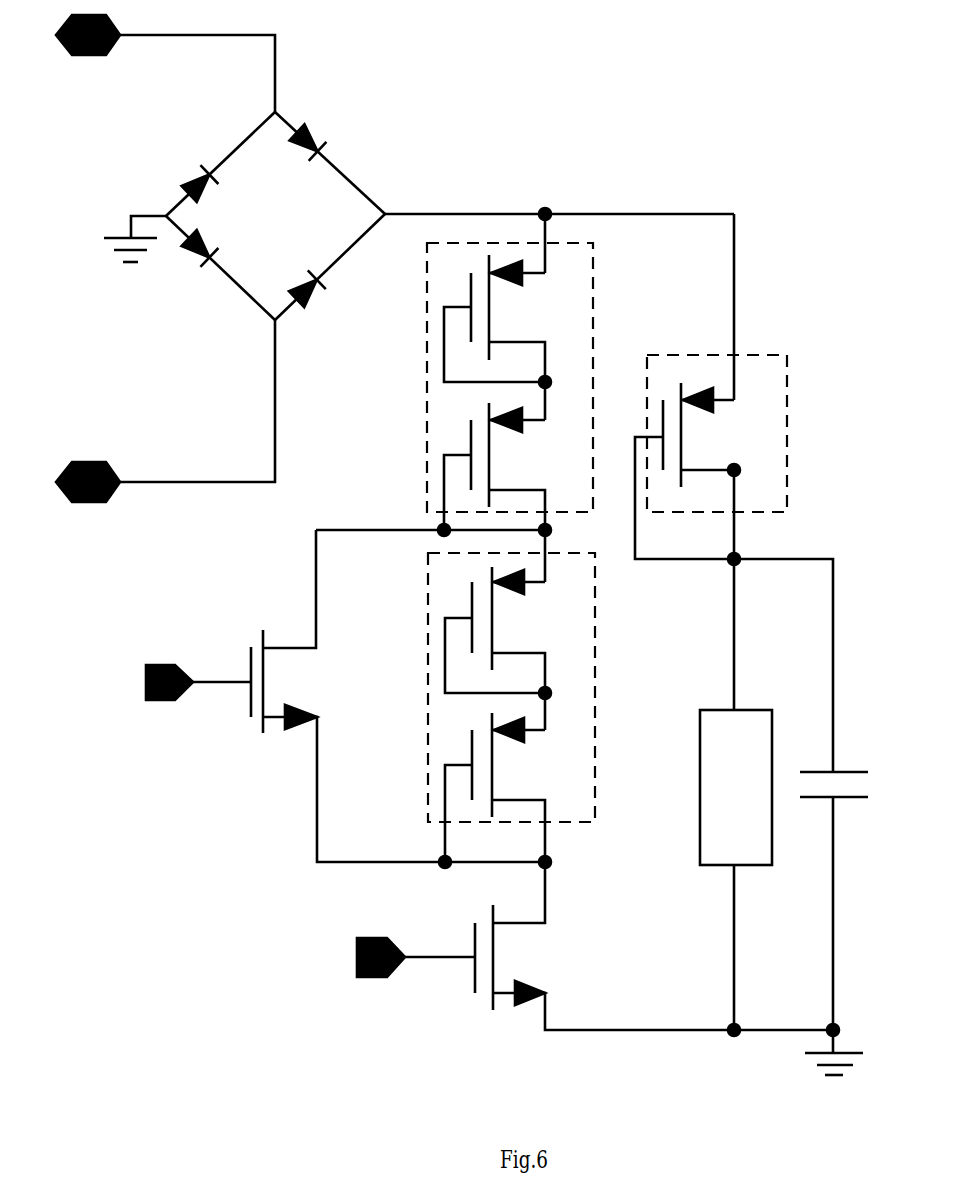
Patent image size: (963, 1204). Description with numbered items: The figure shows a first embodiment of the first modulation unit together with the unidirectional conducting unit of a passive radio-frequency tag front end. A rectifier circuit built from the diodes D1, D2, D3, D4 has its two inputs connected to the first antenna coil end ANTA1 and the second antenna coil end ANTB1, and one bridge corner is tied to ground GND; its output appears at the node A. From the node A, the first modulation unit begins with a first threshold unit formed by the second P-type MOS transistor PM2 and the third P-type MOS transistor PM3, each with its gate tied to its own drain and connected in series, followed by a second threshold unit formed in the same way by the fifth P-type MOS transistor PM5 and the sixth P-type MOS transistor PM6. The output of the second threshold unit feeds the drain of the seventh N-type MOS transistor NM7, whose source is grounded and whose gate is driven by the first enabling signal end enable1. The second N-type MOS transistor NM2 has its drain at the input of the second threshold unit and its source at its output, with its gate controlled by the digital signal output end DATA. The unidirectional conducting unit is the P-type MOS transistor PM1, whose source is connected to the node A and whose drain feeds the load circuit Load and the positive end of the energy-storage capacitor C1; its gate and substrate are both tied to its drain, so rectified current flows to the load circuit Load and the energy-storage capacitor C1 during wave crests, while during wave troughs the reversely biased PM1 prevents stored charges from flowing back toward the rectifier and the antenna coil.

The first antenna coil end ANTA1 is at (165, 63).
The second antenna coil end ANTB1 is at (165, 411).
The diode D1 is at (220, 164).
The diode D2 is at (220, 268).
The diode D3 is at (330, 267).
The diode D4 is at (330, 163).
The ground GND is at (483, 652).
The output of the rectifier circuit A is at (559, 200).
The P-type MOS transistor PM1 is at (734, 493).
The second P-type MOS transistor PM2 is at (508, 301).
The third P-type MOS transistor PM3 is at (510, 389).
The fifth P-type MOS transistor PM5 is at (508, 614).
The sixth P-type MOS transistor PM6 is at (511, 710).
The second N-type MOS transistor NM2 is at (398, 696).
The seventh N-type MOS transistor NM7 is at (657, 949).
The digital signal output end DATA is at (191, 669).
The first enabling signal end enable1 is at (413, 942).
The load circuit Load is at (736, 870).
The energy-storage capacitor C1 is at (850, 900).